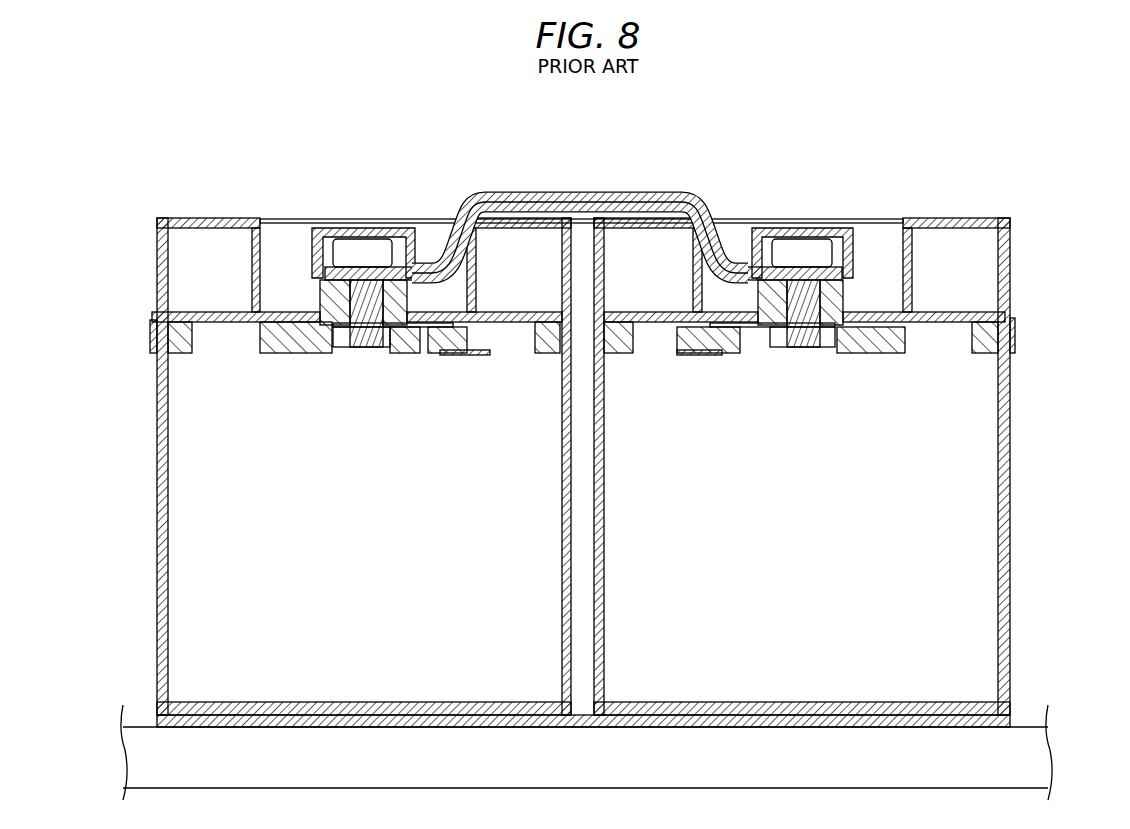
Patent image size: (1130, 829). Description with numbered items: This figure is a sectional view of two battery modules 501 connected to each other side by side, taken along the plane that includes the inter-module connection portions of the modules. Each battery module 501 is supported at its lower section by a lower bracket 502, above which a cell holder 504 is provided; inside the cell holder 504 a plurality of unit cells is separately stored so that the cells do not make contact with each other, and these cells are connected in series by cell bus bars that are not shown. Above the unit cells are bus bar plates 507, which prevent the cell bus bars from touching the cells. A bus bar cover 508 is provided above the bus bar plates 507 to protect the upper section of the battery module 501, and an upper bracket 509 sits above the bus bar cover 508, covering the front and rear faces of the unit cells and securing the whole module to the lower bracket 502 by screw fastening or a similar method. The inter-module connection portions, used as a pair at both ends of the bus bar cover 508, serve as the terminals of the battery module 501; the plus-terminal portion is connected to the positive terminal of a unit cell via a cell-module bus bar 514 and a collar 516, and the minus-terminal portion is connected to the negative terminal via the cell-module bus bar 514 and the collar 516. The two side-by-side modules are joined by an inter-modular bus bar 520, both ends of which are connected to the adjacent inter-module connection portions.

The battery module 501 is at (225, 213).
The lower bracket 502 is at (267, 728).
The cell holder 504 is at (160, 582).
The bus bar plate 507 is at (150, 340).
The bus bar cover 508 is at (185, 312).
The upper bracket 509 is at (1012, 232).
The cell-module bus bar 514 is at (470, 355).
The collar 516 is at (318, 353).
The inter-modular bus bar 520 is at (644, 190).